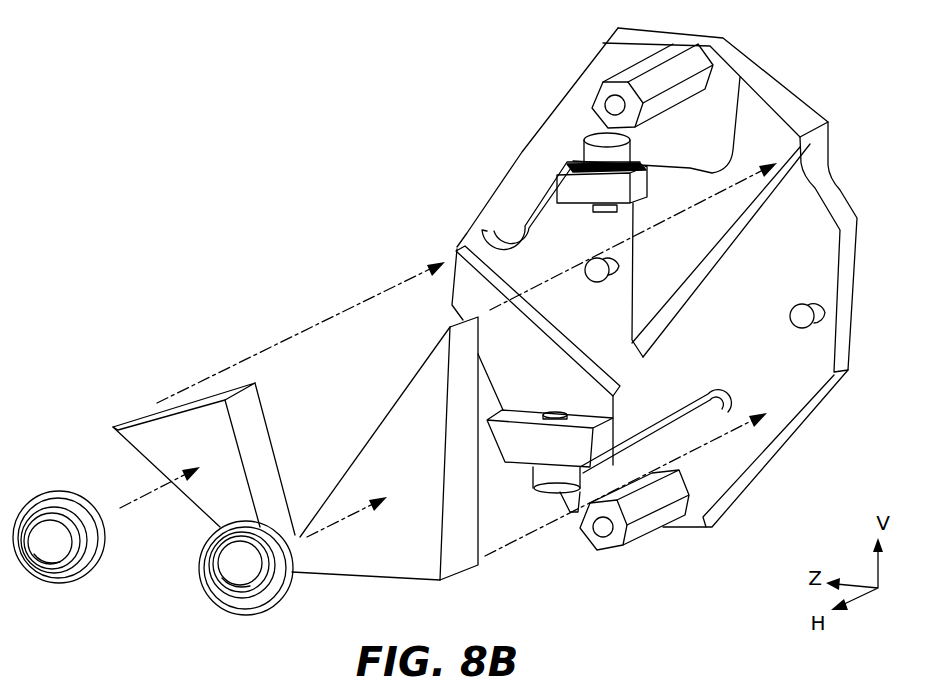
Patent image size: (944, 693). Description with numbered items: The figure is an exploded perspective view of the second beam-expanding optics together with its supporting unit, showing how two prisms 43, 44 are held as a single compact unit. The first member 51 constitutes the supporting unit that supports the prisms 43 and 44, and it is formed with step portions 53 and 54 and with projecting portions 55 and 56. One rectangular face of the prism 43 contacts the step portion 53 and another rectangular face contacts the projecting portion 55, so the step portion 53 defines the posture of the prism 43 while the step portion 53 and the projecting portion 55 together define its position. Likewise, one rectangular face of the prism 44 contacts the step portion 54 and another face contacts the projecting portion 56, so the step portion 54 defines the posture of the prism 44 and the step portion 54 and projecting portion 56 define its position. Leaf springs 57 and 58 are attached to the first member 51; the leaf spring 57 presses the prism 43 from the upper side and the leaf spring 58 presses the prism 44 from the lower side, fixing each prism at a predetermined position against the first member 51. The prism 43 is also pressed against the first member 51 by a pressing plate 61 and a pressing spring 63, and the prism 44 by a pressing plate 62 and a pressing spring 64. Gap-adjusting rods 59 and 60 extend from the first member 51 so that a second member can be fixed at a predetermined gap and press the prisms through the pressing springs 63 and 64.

The prism 43 is at (140, 410).
The prism 44 is at (430, 353).
The first member 51 is at (763, 87).
The step portion 53 is at (458, 247).
The step portion 54 is at (780, 183).
The projecting portion 55 is at (600, 255).
The projecting portion 56 is at (810, 330).
The leaf spring 57 is at (520, 218).
The leaf spring 58 is at (660, 423).
The gap-adjusting rod 59 is at (600, 80).
The gap-adjusting rod 60 is at (585, 540).
The pressing plate 61 is at (47, 495).
The pressing plate 62 is at (280, 598).
The pressing spring 63 is at (50, 577).
The pressing spring 64 is at (203, 585).